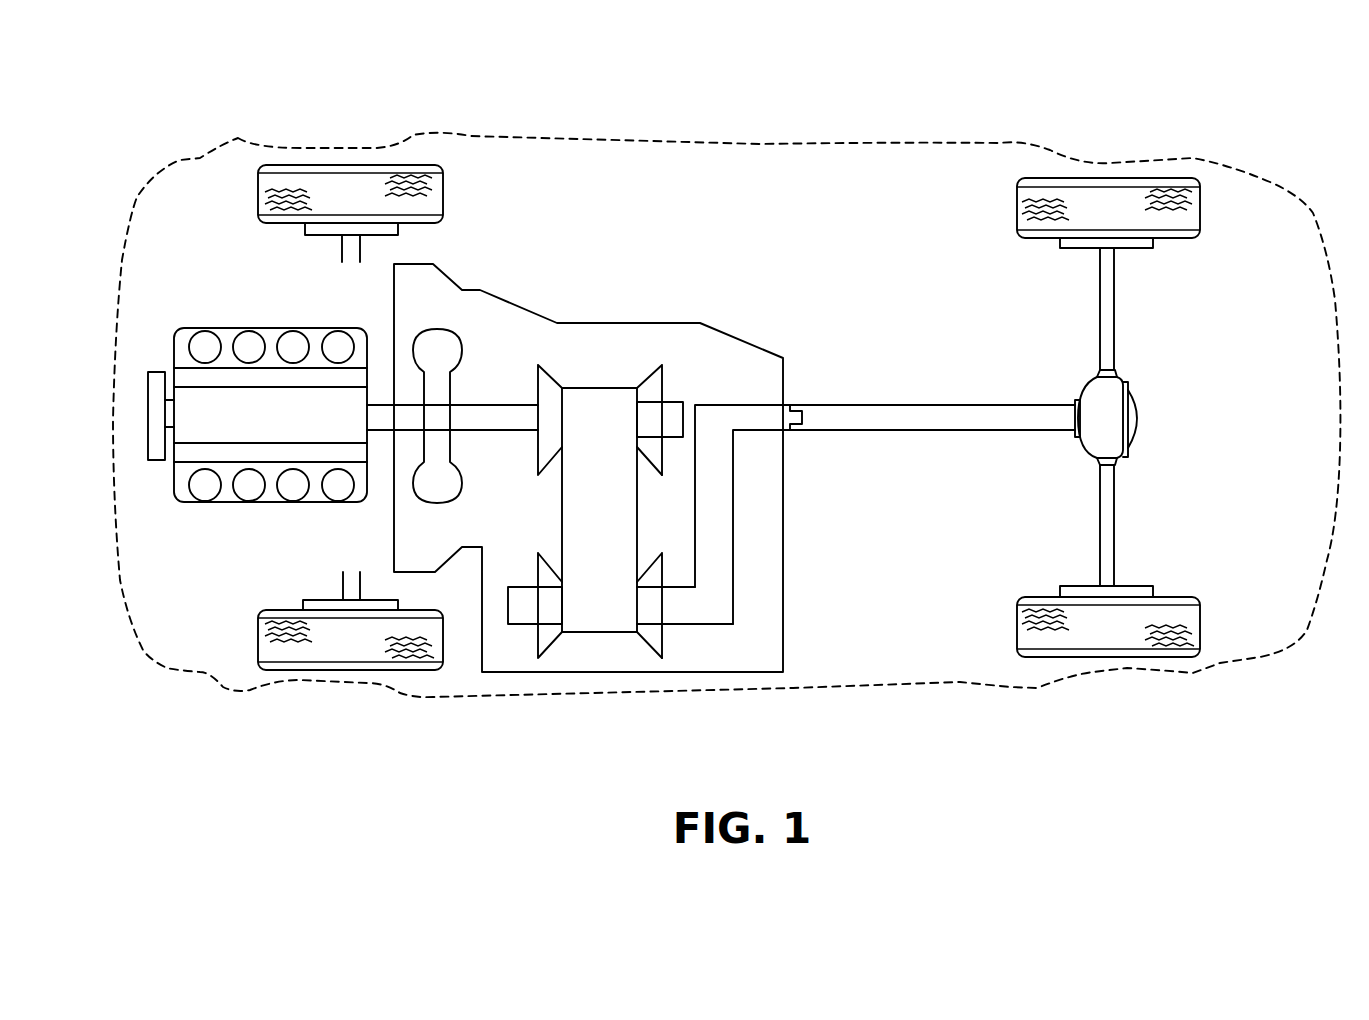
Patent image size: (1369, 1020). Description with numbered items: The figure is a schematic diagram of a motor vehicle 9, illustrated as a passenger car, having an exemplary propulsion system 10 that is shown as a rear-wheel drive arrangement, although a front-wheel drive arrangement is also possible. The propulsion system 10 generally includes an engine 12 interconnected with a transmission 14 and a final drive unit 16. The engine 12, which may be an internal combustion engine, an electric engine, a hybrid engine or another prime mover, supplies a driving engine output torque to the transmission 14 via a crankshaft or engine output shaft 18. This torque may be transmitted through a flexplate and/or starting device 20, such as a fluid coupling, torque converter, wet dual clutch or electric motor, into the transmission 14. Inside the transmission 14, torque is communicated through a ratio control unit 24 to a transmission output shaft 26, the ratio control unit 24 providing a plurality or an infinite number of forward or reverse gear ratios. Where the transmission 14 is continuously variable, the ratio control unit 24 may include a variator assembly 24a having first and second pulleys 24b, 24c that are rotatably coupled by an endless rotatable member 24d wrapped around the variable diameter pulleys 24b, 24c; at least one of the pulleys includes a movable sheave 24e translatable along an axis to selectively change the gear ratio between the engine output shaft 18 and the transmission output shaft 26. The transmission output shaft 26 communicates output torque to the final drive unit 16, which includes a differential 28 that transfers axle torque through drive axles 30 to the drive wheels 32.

The motor vehicle 9 is at (784, 138).
The propulsion system 10 is at (787, 270).
The engine 12 is at (228, 328).
The transmission 14 is at (577, 323).
The final drive unit 16 is at (1147, 393).
The engine output shaft 18 is at (403, 404).
The starting device 20 is at (440, 342).
The ratio control unit 24 is at (625, 539).
The variator assembly 24a is at (550, 501).
The first pulley 24b is at (665, 387).
The second pulley 24c is at (663, 640).
The endless rotatable member 24d is at (593, 618).
The movable sheave 24e is at (655, 452).
The transmission output shaft 26 is at (854, 405).
The differential 28 is at (1143, 418).
The drive axles 30 is at (1116, 301).
The drive wheels 32 is at (1045, 240).